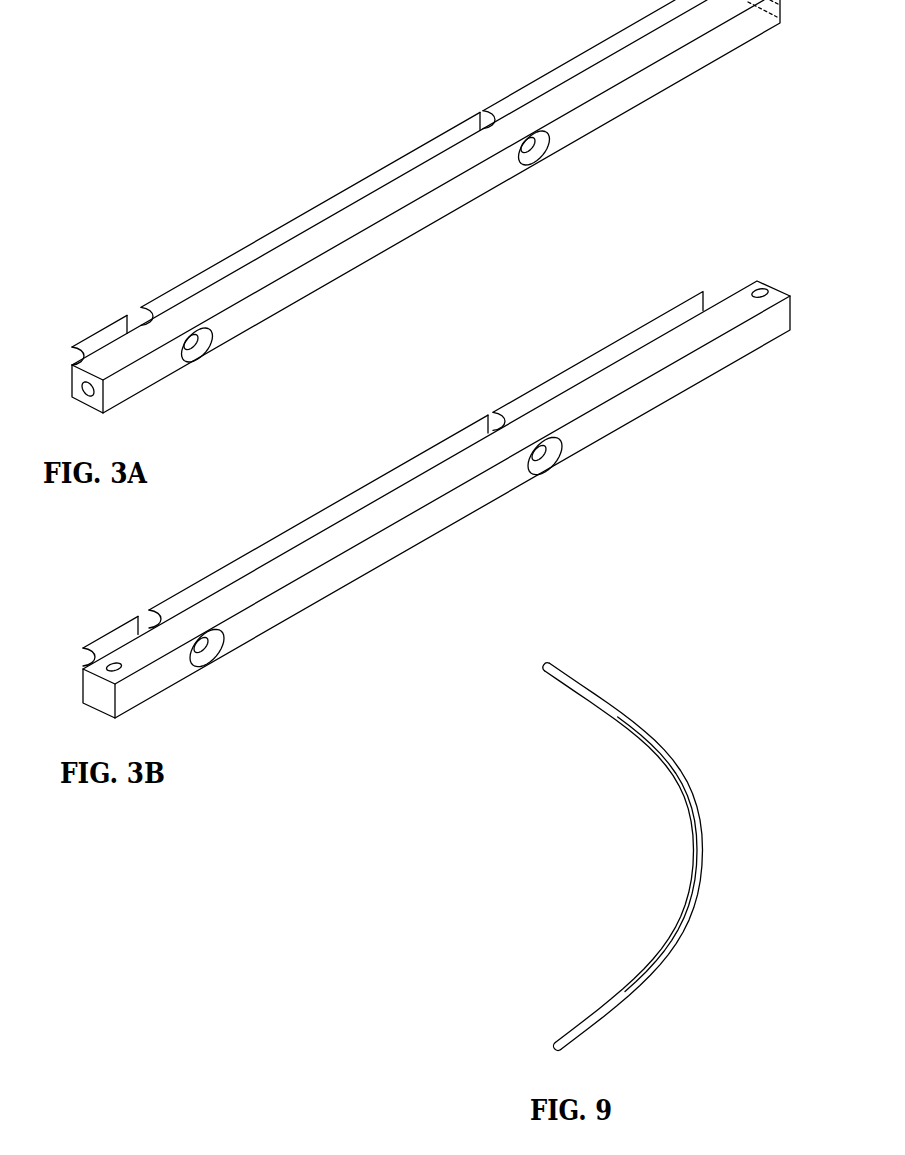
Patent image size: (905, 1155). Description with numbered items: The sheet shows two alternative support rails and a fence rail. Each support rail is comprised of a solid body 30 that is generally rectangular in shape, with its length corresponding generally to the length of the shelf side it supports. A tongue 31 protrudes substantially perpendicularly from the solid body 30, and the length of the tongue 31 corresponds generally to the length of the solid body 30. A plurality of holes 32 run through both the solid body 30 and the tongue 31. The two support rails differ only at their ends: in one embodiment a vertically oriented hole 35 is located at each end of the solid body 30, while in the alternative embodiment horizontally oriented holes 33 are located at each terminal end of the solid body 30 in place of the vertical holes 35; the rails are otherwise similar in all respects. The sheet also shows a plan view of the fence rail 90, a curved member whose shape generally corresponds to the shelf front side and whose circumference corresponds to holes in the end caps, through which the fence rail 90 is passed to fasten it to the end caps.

In FIG. 3A, the solid body 30 is at (630, 97).
In FIG. 3B, the solid body 30 is at (632, 400).
In FIG. 3A, the tongue 31 is at (348, 193).
In FIG. 3B, the tongue 31 is at (300, 533).
In FIG. 3A, the holes 32 is at (192, 342).
In FIG. 3B, the holes 32 is at (203, 642).
In FIG. 3A, the horizontally oriented holes 33 is at (82, 389).
In FIG. 3B, the vertically oriented hole 35 is at (108, 666).
In FIG. 9, the fence rail 90 is at (708, 847).